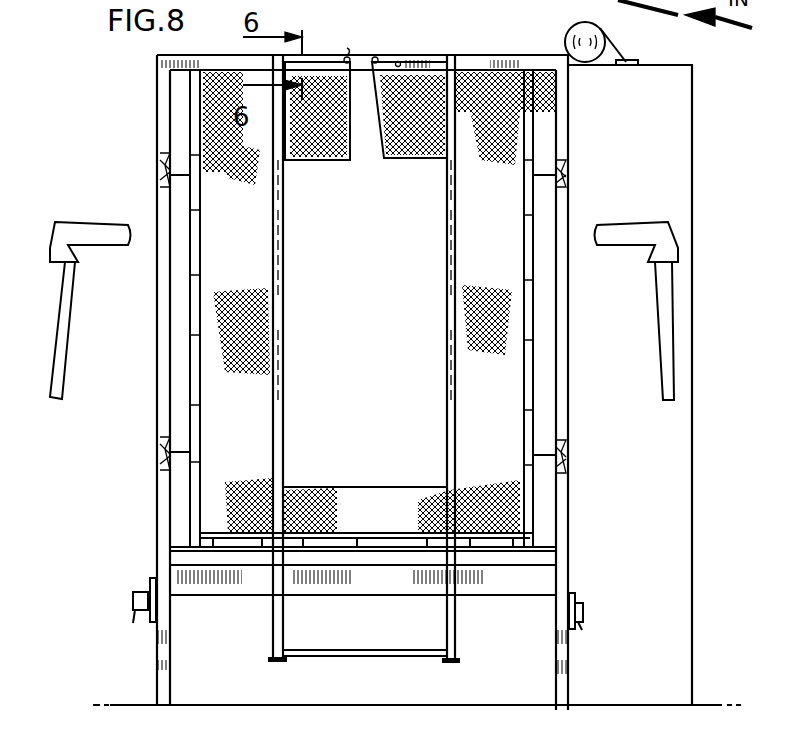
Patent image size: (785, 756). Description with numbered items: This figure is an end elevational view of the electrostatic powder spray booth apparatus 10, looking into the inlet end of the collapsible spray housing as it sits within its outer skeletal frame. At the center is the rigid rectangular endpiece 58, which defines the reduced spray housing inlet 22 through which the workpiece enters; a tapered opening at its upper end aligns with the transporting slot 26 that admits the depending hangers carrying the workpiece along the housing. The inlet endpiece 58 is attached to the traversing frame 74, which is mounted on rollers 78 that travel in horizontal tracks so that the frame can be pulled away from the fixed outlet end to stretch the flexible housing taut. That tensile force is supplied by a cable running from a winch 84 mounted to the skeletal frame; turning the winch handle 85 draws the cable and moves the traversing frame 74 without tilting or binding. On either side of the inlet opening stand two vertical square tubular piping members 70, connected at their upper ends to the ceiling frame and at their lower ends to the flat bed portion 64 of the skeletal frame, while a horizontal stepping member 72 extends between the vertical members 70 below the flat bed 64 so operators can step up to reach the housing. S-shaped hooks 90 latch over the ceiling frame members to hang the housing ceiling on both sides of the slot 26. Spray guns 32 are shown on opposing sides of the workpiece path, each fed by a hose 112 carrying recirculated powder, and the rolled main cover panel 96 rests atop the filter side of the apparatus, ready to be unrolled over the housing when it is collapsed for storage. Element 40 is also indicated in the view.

The spray booth apparatus 10 is at (712, 242).
The spray housing inlet 22 is at (378, 374).
The transporting slot 26 is at (375, 126).
The spray gun 32 is at (58, 224).
The housing 40 is at (148, 510).
The endpiece 58 is at (243, 463).
The flat bed portion 64 is at (487, 592).
The vertical square tubular piping member 70 is at (284, 257).
The horizontal stepping member 72 is at (343, 598).
The traversing frame 74 is at (200, 232).
The roller 78 is at (158, 170).
The winch 84 is at (140, 582).
The winch handle 85 is at (134, 622).
The S-shaped hook 90 is at (348, 57).
The main cover panel 96 is at (565, 40).
The hose 112 is at (65, 378).